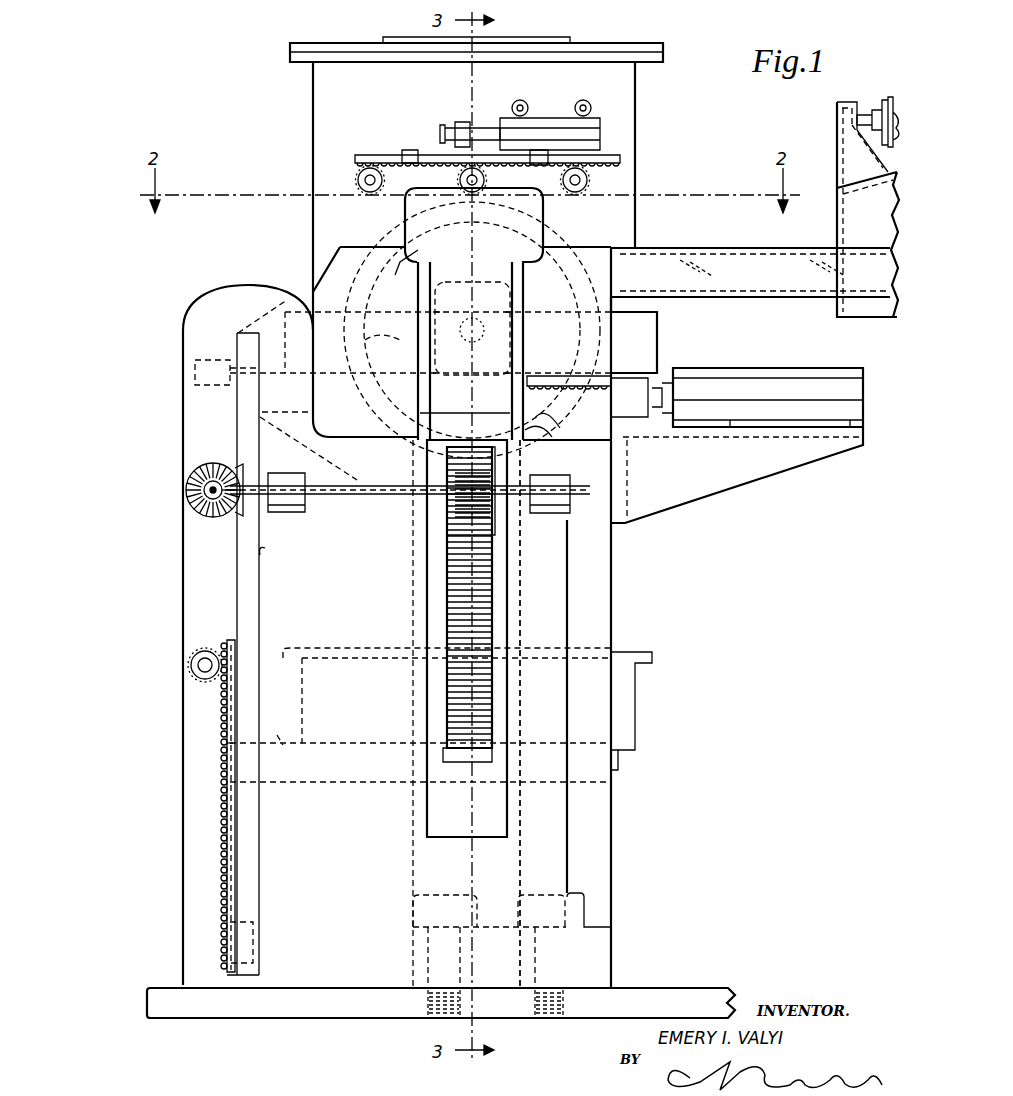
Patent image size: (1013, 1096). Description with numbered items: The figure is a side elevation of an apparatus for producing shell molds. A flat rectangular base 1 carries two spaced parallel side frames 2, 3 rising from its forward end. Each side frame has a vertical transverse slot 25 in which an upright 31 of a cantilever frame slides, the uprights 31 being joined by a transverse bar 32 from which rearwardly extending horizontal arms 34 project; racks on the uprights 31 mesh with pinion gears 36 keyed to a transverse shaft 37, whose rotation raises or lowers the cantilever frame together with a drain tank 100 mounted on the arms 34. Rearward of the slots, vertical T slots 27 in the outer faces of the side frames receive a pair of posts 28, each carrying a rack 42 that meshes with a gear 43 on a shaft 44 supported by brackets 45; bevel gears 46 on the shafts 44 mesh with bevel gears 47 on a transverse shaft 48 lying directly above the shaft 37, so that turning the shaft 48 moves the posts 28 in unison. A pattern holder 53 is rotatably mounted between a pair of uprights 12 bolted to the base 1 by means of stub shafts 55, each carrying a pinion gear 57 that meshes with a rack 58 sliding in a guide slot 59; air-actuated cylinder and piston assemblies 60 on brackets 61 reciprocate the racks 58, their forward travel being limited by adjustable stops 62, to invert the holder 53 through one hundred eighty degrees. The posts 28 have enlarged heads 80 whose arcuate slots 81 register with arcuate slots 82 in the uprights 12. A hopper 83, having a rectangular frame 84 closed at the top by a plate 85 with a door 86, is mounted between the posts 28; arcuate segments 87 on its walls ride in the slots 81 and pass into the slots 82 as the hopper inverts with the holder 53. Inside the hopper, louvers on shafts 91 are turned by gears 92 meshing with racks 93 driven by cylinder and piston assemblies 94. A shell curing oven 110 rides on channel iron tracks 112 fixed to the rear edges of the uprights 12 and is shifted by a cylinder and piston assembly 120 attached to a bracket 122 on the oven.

The base 1 is at (285, 1022).
The side frame 2 is at (420, 678).
The side frame 3 is at (185, 588).
The uprights 12 is at (625, 855).
The vertical transverse slots 25 is at (265, 556).
The T slots 27 is at (523, 585).
The posts 28 is at (430, 630).
The uprights 31 is at (248, 692).
The transverse bar 32 is at (226, 744).
The horizontal arms 34 is at (645, 762).
The pinion gears 36 is at (210, 650).
The transverse shaft 37 is at (190, 672).
The rack 42 is at (440, 552).
The gear 43 is at (500, 540).
The shaft 44 is at (358, 490).
The brackets 45 is at (548, 490).
The bevel gears 46 is at (228, 510).
The bevel gears 47 is at (190, 478).
The transverse shaft 48 is at (200, 494).
The pattern holder 53 is at (640, 345).
The stub shafts 55 is at (462, 312).
The pinion gear 57 is at (415, 342).
The rack 58 is at (540, 385).
The guide slot 59 is at (562, 432).
The cylinder and piston assemblies 60 is at (768, 382).
The brackets 61 is at (735, 485).
The adjustable stops 62 is at (212, 350).
The heads 80 is at (548, 208).
The arcuate slots 81 is at (415, 210).
The arcuate slots 82 is at (352, 292).
The hopper 83 is at (638, 148).
The rectangular frame 84 is at (330, 140).
The plate 85 is at (650, 60).
The door 86 is at (395, 38).
The arcuate segments 87 is at (555, 235).
The shafts 91 is at (345, 212).
The gears 92 is at (600, 182).
The racks 93 is at (422, 150).
The cylinder and piston assemblies 94 is at (547, 124).
The drain tank 100 is at (625, 700).
The shell curing oven 110 is at (836, 230).
The channel iron tracks 112 is at (695, 258).
The cylinder and piston assembly 120 is at (897, 98).
The bracket 122 is at (825, 135).